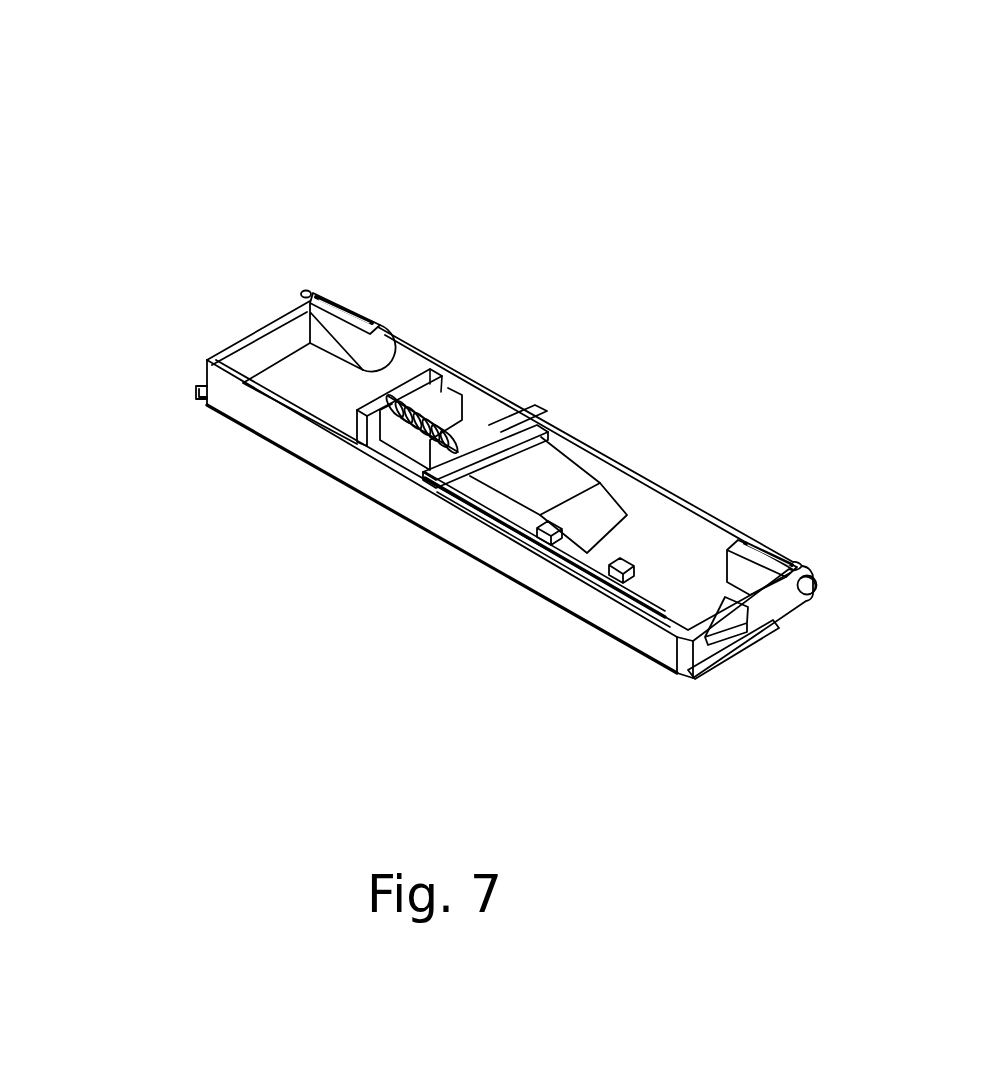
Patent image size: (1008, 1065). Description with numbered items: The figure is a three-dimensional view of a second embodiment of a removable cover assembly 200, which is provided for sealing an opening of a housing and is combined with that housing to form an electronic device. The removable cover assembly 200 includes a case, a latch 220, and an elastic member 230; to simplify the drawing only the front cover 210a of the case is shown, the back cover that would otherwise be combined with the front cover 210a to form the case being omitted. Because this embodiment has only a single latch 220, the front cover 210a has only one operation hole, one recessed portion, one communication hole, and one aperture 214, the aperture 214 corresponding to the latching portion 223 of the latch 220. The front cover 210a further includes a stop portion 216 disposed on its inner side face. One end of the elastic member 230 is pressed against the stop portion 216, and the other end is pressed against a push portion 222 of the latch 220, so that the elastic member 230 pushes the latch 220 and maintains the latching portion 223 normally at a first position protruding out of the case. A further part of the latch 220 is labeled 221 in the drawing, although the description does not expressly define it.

The removable cover assembly 200 is at (231, 146).
The front cover 210a is at (257, 413).
The aperture 214 is at (725, 607).
The stop portion 216 is at (405, 388).
The latch 220 is at (508, 530).
The slider plate 221 is at (484, 431).
The push portion 222 is at (565, 548).
The latching portion 223 is at (745, 650).
The elastic member 230 is at (432, 400).